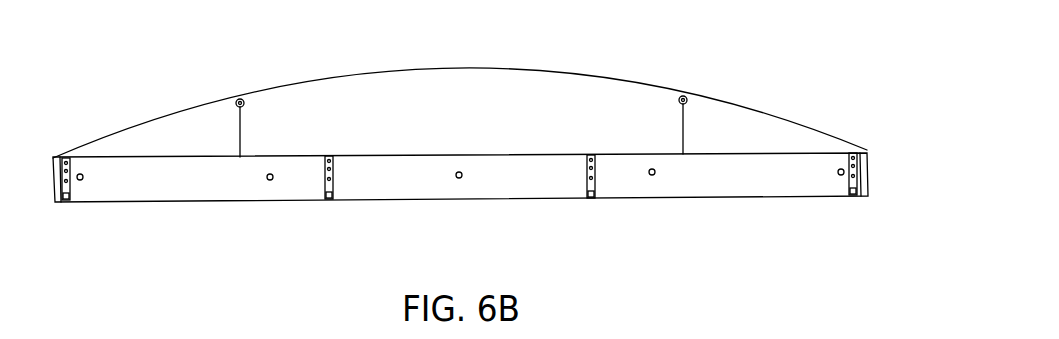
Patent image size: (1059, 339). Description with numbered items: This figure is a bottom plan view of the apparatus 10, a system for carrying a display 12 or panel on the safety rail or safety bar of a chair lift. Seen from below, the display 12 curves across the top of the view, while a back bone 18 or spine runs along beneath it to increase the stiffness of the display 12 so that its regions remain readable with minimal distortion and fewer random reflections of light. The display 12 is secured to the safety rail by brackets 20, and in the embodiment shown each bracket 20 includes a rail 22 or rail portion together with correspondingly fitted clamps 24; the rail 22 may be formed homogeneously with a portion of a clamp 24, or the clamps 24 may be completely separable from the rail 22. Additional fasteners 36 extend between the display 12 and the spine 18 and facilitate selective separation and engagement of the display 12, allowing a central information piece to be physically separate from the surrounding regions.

The apparatus 10 is at (782, 88).
The display 12 is at (540, 80).
The back bone 18 is at (718, 184).
The bracket 20 is at (77, 220).
The rail 22 is at (75, 172).
The clamp 24 is at (72, 193).
The fastener 36 is at (248, 103).